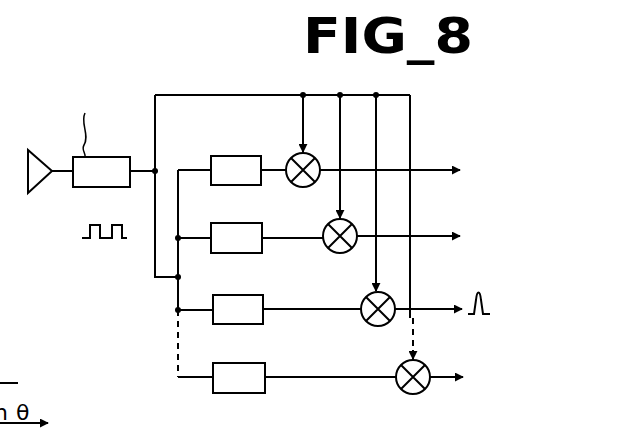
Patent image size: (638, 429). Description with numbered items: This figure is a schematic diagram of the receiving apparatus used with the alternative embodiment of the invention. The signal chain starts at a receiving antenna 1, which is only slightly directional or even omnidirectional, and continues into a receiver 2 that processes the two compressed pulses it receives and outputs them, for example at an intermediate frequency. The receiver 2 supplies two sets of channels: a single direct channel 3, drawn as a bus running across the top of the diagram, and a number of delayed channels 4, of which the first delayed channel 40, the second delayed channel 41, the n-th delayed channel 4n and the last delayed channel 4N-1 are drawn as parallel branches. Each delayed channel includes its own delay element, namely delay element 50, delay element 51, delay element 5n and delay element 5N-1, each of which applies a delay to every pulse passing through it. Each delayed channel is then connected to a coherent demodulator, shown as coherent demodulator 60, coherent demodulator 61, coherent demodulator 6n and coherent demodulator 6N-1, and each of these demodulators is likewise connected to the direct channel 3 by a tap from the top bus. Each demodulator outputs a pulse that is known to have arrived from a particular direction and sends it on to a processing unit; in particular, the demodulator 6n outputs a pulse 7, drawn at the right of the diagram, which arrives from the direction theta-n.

The receiving antenna 1 is at (46, 124).
The receiver 2 is at (105, 131).
The direct channel 3 is at (208, 73).
The delayed channels 4 is at (156, 282).
The delayed channel 40 is at (206, 143).
The delayed channel 41 is at (206, 209).
The delayed channel 4n is at (218, 284).
The delayed channel 4N-1 is at (205, 396).
The delay element 50 is at (247, 144).
The delay element 51 is at (247, 210).
The delay element 5n is at (247, 283).
The delay element 5N-1 is at (243, 363).
The coherent demodulator 60 is at (316, 152).
The coherent demodulator 61 is at (346, 219).
The coherent demodulator 6n is at (385, 292).
The coherent demodulator 6N-1 is at (440, 346).
The pulse 7 is at (485, 283).